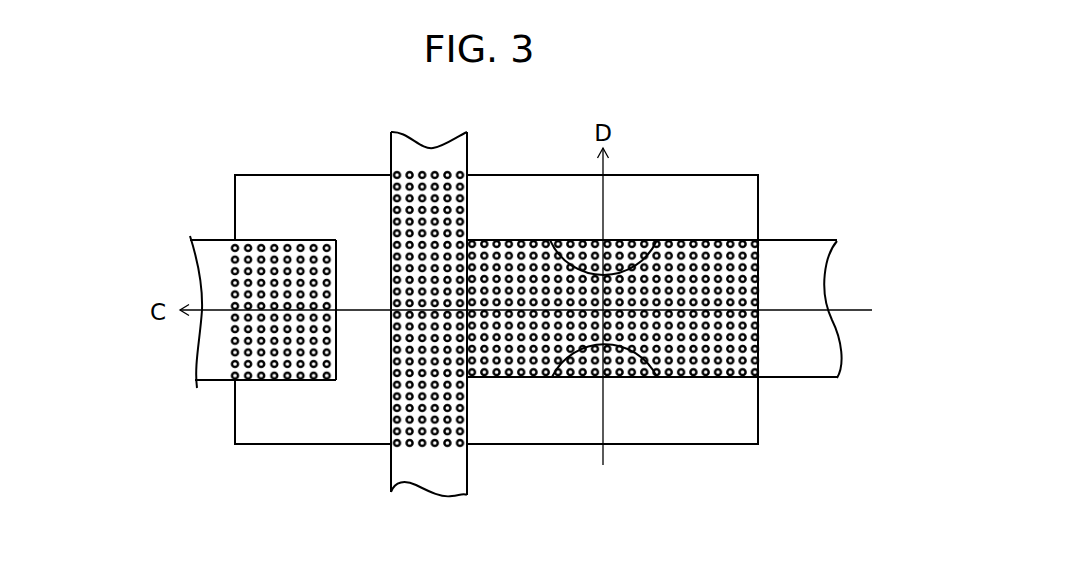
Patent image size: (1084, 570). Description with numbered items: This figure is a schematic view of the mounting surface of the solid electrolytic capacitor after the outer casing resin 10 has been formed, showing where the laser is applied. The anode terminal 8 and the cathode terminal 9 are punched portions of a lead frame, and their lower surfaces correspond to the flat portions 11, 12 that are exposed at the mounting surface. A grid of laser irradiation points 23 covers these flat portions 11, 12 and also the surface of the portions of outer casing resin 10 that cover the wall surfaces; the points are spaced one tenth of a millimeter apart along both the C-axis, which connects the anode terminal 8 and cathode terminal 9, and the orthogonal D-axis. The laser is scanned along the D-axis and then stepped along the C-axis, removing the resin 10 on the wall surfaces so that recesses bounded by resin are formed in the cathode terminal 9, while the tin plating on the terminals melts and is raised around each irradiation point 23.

The outer casing resin 10 is at (535, 203).
The flat portion 11 is at (220, 315).
The anode terminal 8 is at (188, 365).
The cathode terminal 9 is at (795, 383).
The laser irradiation points 23 is at (717, 250).
The flat portion 12 is at (612, 320).